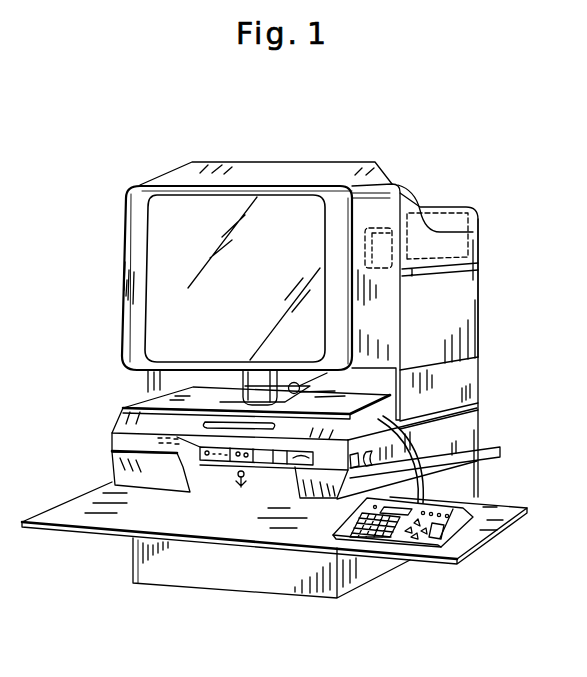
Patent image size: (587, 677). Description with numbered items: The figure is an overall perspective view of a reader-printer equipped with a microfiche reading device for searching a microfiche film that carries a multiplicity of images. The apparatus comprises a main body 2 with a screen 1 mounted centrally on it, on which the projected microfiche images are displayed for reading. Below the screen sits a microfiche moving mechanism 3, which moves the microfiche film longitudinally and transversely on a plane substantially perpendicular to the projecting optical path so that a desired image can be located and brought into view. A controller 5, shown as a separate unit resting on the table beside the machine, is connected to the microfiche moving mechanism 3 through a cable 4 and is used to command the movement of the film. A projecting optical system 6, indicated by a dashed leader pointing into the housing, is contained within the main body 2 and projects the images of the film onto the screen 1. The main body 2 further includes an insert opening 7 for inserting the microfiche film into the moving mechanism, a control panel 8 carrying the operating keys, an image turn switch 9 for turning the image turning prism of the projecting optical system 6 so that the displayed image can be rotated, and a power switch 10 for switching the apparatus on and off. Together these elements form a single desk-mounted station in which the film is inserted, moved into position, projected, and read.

The screen 1 is at (145, 251).
The main body 2 is at (480, 320).
The microfiche moving mechanism 3 is at (117, 418).
The cable 4 is at (400, 455).
The controller 5 is at (463, 506).
The projecting optical system 6 is at (239, 490).
The insert opening 7 is at (200, 425).
The control panel 8 is at (200, 453).
The image turn switch 9 is at (321, 500).
The power switch 10 is at (405, 444).